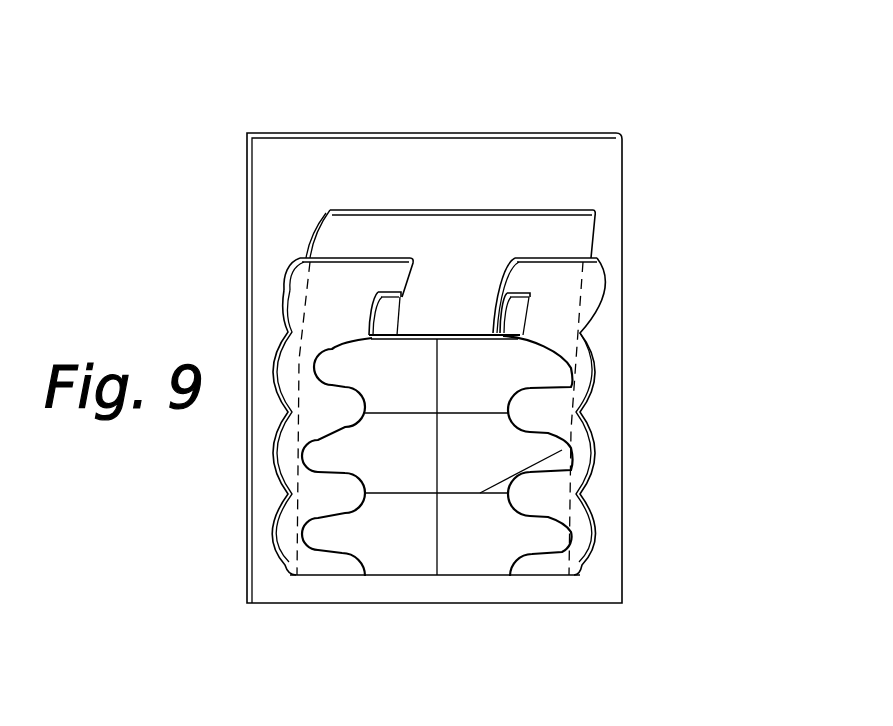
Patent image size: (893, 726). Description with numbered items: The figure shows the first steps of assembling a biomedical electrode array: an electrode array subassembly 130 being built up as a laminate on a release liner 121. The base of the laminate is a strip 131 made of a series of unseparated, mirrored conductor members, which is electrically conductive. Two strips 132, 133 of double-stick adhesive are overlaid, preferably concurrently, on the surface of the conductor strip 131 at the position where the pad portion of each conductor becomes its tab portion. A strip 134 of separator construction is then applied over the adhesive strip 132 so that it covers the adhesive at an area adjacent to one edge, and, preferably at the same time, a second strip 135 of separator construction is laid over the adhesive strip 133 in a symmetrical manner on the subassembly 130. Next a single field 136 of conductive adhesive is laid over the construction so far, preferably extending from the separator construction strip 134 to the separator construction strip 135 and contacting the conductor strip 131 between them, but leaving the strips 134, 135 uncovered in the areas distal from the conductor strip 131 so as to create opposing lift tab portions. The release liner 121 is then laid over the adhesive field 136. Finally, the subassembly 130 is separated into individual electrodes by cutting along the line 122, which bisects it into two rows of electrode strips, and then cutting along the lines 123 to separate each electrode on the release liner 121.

The electrode array subassembly 130 is at (665, 139).
The release liner 121 is at (272, 166).
The cutting line 122 is at (437, 553).
The cutting lines 123 is at (566, 443).
The strip of conductor members 131 is at (498, 366).
The strip of double-stick adhesive 132 is at (520, 311).
The strip of double-stick adhesive 133 is at (389, 308).
The strip of separator construction 134 is at (598, 276).
The strip of separator construction 135 is at (296, 284).
The field of adhesive 136 is at (585, 226).